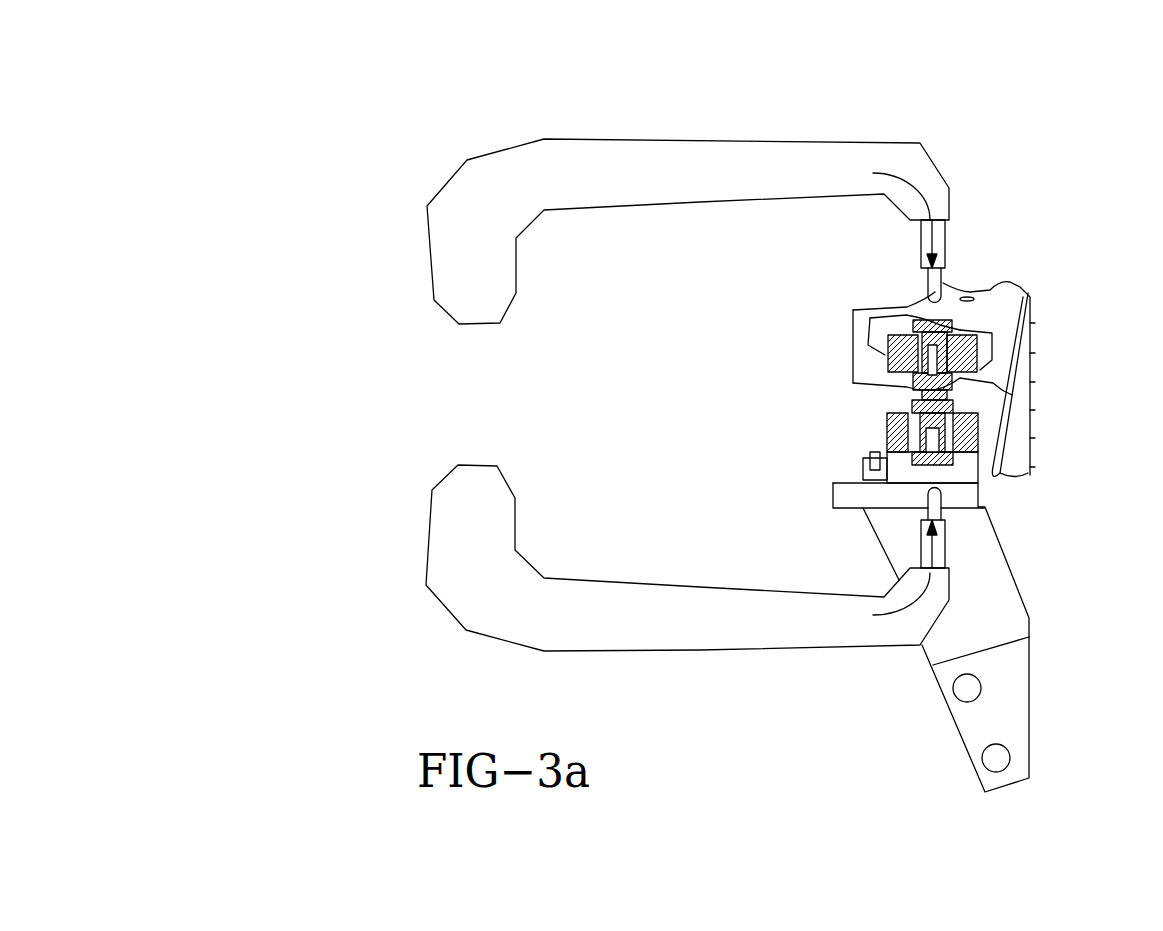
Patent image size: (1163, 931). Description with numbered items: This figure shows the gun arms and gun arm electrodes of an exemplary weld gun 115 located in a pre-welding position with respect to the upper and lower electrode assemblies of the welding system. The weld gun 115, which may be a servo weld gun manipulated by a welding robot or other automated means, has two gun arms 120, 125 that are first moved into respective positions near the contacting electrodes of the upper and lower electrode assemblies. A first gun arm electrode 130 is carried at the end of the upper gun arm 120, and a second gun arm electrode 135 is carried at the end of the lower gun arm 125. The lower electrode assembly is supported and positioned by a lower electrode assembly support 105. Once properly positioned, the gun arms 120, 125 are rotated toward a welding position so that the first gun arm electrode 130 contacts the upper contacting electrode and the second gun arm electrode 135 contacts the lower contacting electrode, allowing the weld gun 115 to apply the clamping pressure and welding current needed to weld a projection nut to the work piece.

The lower electrode assembly support 105 is at (988, 603).
The weld gun 115 is at (385, 482).
The gun arm 120 is at (659, 155).
The gun arm 125 is at (660, 637).
The first gun arm electrode 130 is at (935, 286).
The second gun arm electrode 135 is at (938, 507).